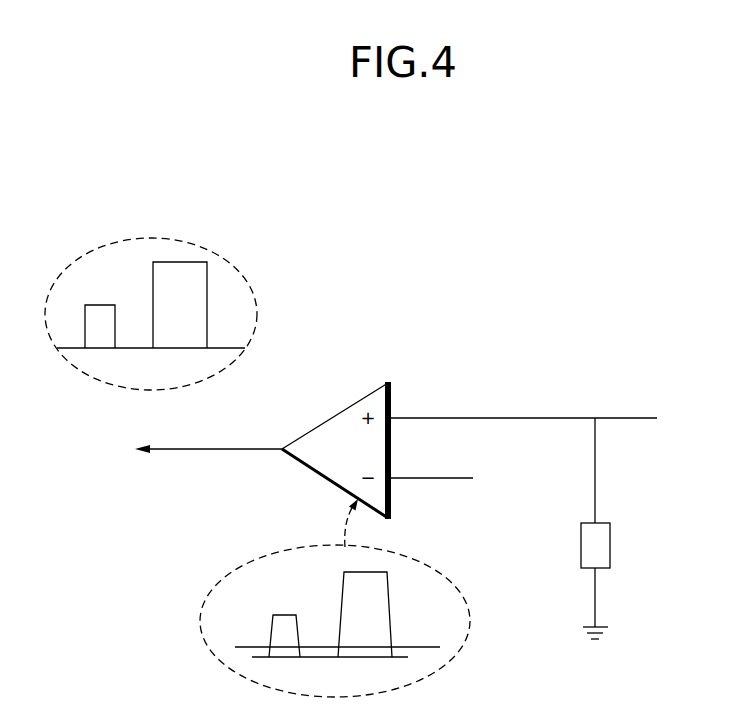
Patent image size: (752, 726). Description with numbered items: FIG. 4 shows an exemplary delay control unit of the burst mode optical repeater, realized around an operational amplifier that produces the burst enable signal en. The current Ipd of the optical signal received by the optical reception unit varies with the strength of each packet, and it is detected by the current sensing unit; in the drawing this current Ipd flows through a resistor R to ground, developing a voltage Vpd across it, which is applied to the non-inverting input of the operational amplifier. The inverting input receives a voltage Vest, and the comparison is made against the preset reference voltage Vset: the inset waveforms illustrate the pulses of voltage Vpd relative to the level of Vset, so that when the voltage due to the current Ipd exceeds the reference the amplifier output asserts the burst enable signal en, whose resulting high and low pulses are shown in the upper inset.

The burst enable signal en is at (172, 388).
The photodiode voltage Vpd is at (524, 404).
The current of optical signal Ipd is at (679, 418).
The estimated/reference voltage Vest is at (456, 478).
The resistor R is at (595, 528).
The preset reference voltage Vset is at (449, 646).